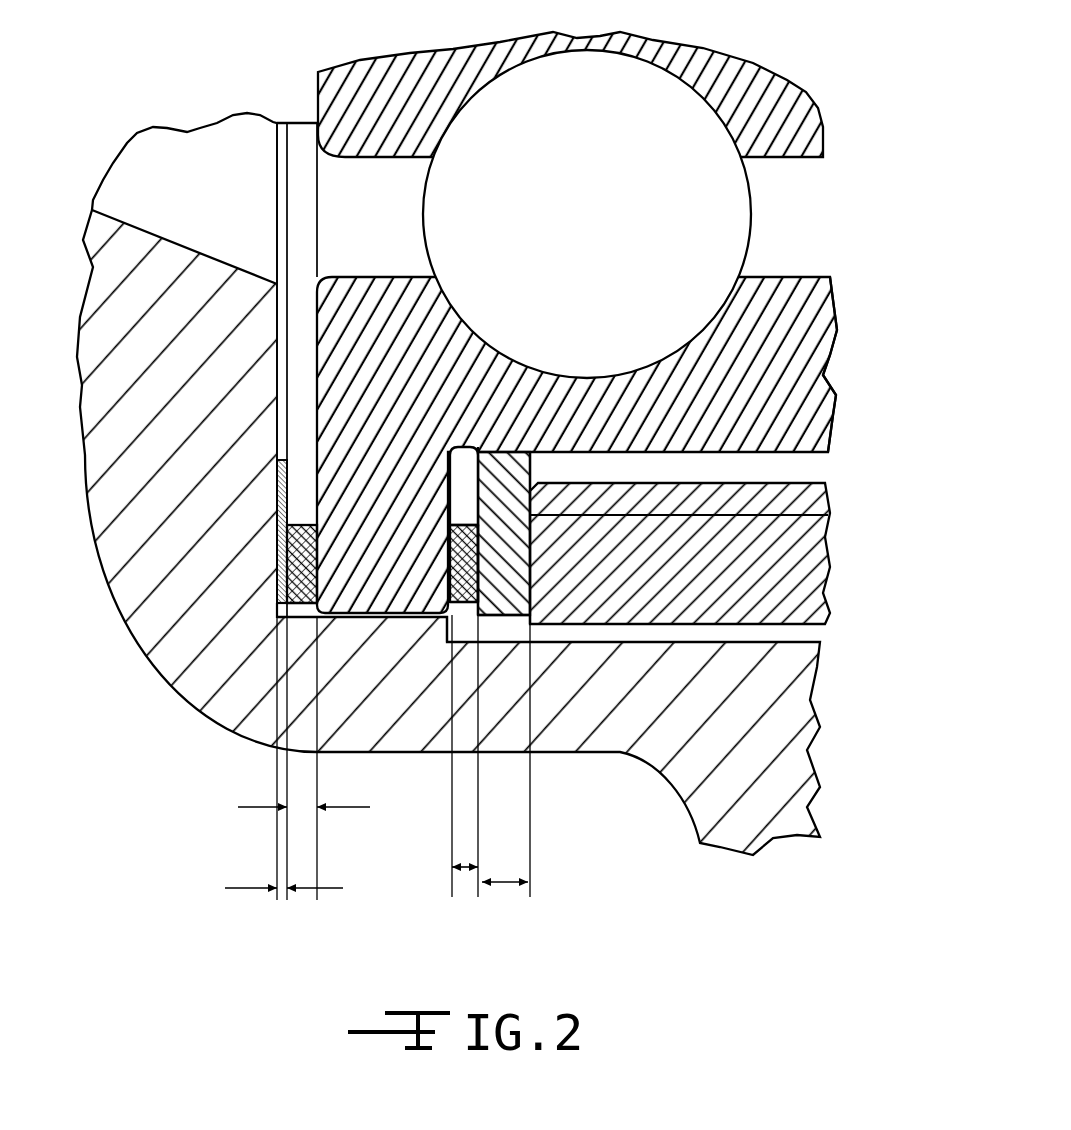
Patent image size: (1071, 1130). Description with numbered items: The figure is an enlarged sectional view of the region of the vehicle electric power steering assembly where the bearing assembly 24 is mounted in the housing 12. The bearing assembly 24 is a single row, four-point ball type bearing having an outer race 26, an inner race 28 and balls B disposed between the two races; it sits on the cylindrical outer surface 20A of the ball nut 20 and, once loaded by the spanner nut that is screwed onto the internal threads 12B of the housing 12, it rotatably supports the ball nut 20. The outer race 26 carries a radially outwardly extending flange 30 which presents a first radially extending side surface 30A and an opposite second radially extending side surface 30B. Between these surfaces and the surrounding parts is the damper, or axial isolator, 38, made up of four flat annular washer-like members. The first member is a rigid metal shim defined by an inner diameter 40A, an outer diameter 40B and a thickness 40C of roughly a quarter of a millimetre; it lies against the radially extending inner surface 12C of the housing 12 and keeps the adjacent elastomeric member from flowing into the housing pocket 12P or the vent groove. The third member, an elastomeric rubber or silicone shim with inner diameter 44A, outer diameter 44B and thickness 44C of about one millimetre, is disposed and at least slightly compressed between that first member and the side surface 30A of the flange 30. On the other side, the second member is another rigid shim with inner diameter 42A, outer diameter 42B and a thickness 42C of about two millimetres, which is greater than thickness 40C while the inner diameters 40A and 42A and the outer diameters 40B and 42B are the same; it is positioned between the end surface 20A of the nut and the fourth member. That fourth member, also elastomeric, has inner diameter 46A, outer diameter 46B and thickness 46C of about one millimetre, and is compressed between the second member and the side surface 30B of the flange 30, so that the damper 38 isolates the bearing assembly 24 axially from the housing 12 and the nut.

The housing 12 is at (658, 784).
The internal threads 12B is at (740, 636).
The radially extending inner surface 12C is at (280, 401).
The pocket 12P is at (275, 602).
The ball nut 20 is at (780, 530).
The cylindrical outer surface 20A is at (530, 580).
The bearing assembly 24 is at (769, 268).
The outer race 26 is at (768, 90).
The inner race 28 is at (803, 362).
The balls B is at (668, 212).
The radially outwardly extending flange 30 is at (478, 576).
The first radially extending side surface 30A is at (277, 558).
The second radially extending side surface 30B is at (478, 553).
The damper 38 is at (432, 642).
The inner diameter 40A is at (280, 460).
The outer diameter 40B is at (277, 603).
The thickness 40C is at (282, 892).
The inner diameter 42A is at (507, 450).
The outer diameter 42B is at (510, 620).
The thickness 42C is at (505, 884).
The inner diameter 44A is at (303, 527).
The outer diameter 44B is at (300, 610).
The thickness 44C is at (302, 810).
The inner diameter 46A is at (452, 552).
The outer diameter 46B is at (462, 610).
The thickness 46C is at (465, 870).